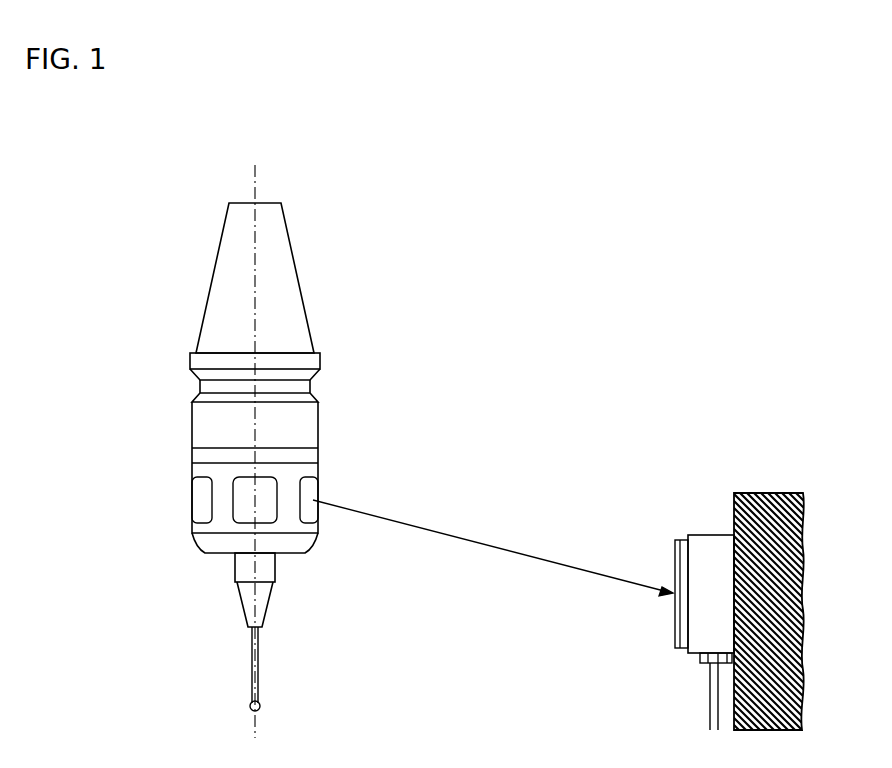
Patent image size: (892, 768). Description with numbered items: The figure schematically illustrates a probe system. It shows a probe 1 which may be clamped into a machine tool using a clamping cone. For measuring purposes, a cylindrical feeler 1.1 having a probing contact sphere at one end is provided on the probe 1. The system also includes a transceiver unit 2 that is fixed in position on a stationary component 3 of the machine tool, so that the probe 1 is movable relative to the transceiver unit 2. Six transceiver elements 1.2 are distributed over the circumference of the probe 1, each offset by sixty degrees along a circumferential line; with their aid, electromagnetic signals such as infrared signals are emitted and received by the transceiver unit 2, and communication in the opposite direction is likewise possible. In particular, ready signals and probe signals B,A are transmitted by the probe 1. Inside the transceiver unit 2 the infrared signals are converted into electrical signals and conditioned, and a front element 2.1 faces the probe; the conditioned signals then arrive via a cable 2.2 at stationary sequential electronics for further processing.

The probe 1 is at (232, 451).
The cylindrical feeler 1.1 is at (258, 643).
The transceiver elements 1.2 is at (248, 493).
The transceiver unit 2 is at (678, 587).
The optical window / front plate 2.1 is at (675, 553).
The cable 2.2 is at (712, 727).
The stationary component 3 is at (762, 506).
The ready signals and probe signals B,A is at (473, 543).